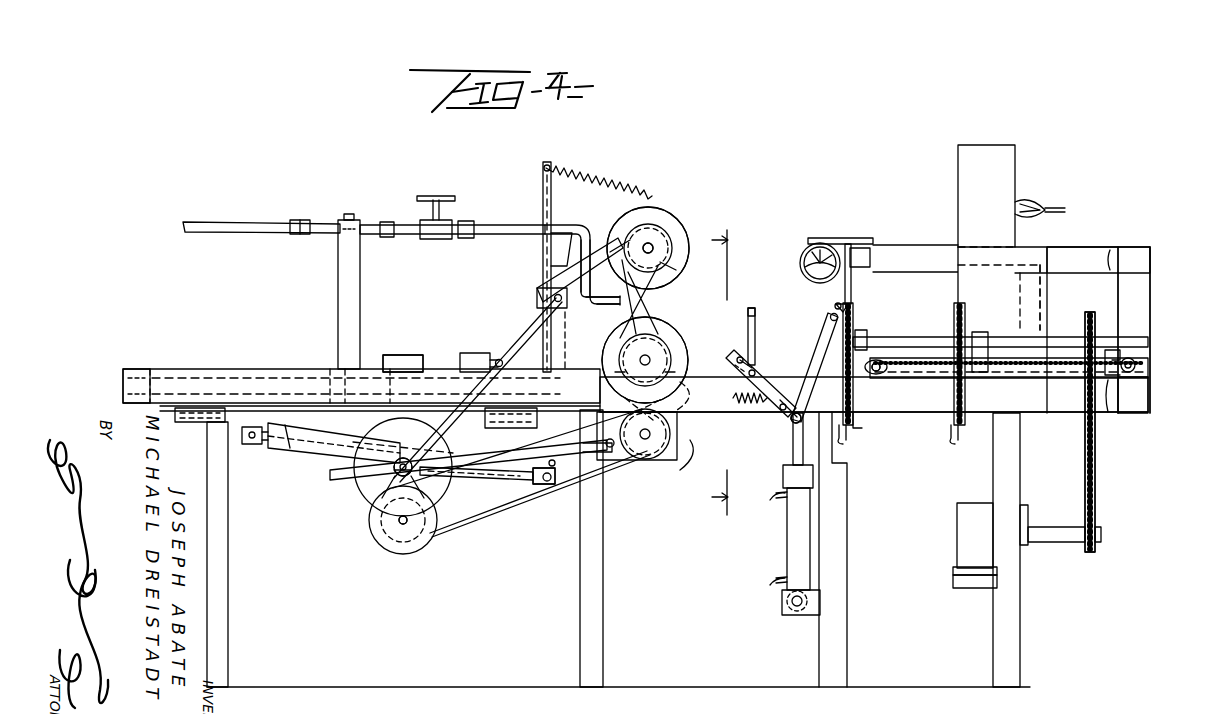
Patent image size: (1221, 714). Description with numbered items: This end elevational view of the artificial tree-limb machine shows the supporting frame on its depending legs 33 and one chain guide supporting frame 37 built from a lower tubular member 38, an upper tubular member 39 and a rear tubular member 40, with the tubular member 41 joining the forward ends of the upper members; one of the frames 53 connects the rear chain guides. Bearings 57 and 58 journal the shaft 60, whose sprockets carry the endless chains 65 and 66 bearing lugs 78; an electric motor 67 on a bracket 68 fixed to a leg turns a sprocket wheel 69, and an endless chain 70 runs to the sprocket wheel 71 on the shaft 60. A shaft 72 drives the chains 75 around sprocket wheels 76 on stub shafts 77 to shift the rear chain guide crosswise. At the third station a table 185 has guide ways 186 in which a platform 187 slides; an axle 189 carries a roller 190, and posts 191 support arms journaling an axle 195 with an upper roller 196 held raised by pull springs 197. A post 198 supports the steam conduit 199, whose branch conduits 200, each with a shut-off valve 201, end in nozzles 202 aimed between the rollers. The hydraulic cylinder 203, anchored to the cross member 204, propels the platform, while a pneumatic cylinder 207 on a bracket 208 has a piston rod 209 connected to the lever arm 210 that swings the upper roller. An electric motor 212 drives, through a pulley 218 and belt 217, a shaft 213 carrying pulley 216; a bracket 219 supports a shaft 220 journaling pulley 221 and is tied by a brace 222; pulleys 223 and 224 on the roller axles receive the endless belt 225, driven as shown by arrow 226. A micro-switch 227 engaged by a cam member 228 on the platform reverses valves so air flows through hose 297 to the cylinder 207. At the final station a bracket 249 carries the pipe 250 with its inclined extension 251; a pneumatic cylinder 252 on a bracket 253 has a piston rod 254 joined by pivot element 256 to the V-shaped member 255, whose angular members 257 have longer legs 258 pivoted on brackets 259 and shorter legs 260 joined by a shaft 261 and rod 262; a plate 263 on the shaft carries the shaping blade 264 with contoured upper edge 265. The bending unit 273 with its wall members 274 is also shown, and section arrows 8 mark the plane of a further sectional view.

The section line 8- 8 is at (710, 372).
The depending legs 33 is at (226, 609).
The chain guide supporting frame 37 is at (1163, 253).
The lower tubular member 38 is at (1148, 390).
The upper tubular member 39 is at (1105, 268).
The rear tubular member 40 is at (1148, 326).
The tubular member 41 is at (871, 256).
The frame 53 is at (1053, 305).
The bearings 57 is at (868, 340).
The bearings 58 is at (986, 332).
The shaft 60 is at (930, 337).
The endless chain 65 is at (865, 425).
The second endless chain 66 is at (962, 425).
The electric motor 67 is at (957, 541).
The bracket 68 is at (970, 590).
The sprocket wheel 69 is at (1098, 536).
The endless chain 70 is at (1097, 480).
The sprocket wheel 71 is at (1096, 320).
The shaft 72 is at (1136, 364).
The chains 75 is at (935, 378).
The sprocket wheels 76 is at (880, 376).
The stub shafts 77 is at (880, 364).
The lugs 78 is at (856, 445).
The table 185 is at (413, 372).
The guide ways 186 is at (200, 423).
The platform 187 is at (318, 432).
The axle 189 is at (652, 358).
The roller 190 is at (582, 330).
The posts 191 is at (543, 270).
The axle 195 is at (656, 256).
The roller 196 is at (675, 232).
The pull springs 197 is at (606, 190).
The post 198 is at (338, 268).
The steam conduit 199 is at (318, 222).
The branch conduits 200 is at (492, 240).
The shut-off valve 201 is at (445, 200).
The discharge nozzle 202 is at (586, 305).
The hydraulic cylinder 203 is at (232, 376).
The cross member 204 is at (142, 368).
The pneumatic cylinder 207 is at (300, 450).
The bracket 208 is at (254, 445).
The piston rod 209 is at (508, 478).
The lever arm 210 is at (545, 436).
The electric motor 212 is at (380, 476).
The shaft 213 is at (399, 522).
The belt pulley 216 is at (410, 556).
The endless belt 217 is at (393, 474).
The pulley 218 is at (405, 458).
The bracket 219 is at (693, 465).
The shaft 220 is at (648, 456).
The pulley 221 is at (672, 434).
The brace 222 is at (565, 495).
The pulley 223 is at (660, 352).
The pulley 224 is at (658, 240).
The endless belt 225 is at (482, 522).
The arrow 226 is at (493, 357).
The micro-switch 227 is at (470, 353).
The cam member 228 is at (392, 355).
The bracket 249 is at (873, 240).
The pipe 250 is at (800, 264).
The upwardly inclined extension 251 is at (822, 250).
The pneumatic cylinder 252 is at (787, 533).
The bracket 253 is at (785, 615).
The piston rod 254 is at (793, 424).
The V-shaped member 255 is at (796, 391).
The pivot element 256 is at (790, 422).
The angular members 257 is at (814, 344).
The longer inner legs 258 is at (856, 420).
The brackets 259 is at (836, 306).
The shorter legs 260 is at (780, 412).
The shaft 261 is at (735, 372).
The rod 262 is at (740, 361).
The plate 263 is at (733, 398).
The shaping blade 264 is at (756, 340).
The contoured upper edge 265 is at (750, 314).
The bending unit 273 is at (1040, 189).
The wall members 274 is at (958, 168).
The hose 297 is at (290, 456).